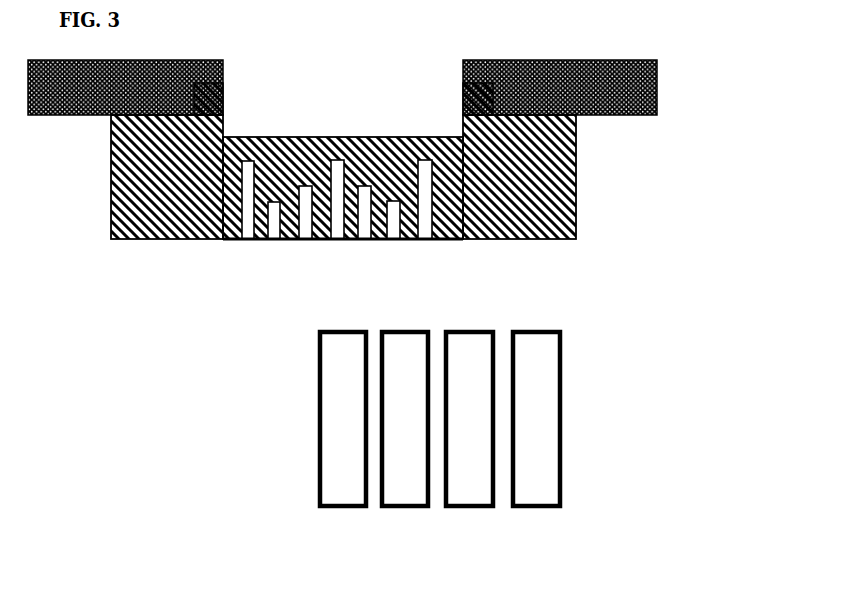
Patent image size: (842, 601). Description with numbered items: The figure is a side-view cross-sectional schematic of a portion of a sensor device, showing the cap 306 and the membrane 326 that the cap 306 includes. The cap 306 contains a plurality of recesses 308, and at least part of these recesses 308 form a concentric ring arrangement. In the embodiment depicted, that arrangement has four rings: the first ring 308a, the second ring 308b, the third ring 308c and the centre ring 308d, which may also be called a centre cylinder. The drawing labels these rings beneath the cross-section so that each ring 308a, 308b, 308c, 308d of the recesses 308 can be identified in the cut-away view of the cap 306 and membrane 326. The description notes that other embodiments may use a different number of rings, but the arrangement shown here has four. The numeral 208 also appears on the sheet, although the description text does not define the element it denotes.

The substrate 208 is at (508, 7).
The cap 306 is at (573, 60).
The membrane 326 is at (353, 160).
The plurality of recesses 308 is at (252, 239).
The first ring 308a is at (424, 233).
The second ring 308b is at (393, 236).
The third ring 308c is at (369, 234).
The centre ring 308d is at (347, 234).